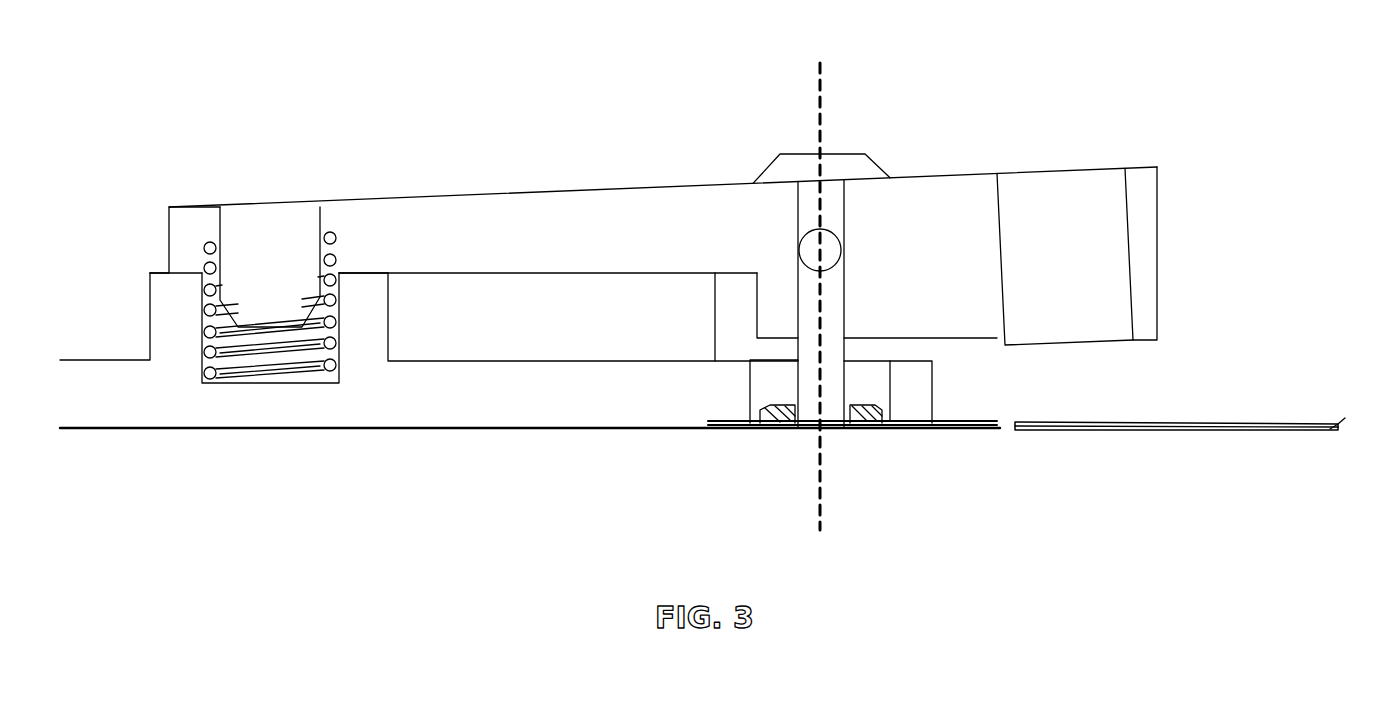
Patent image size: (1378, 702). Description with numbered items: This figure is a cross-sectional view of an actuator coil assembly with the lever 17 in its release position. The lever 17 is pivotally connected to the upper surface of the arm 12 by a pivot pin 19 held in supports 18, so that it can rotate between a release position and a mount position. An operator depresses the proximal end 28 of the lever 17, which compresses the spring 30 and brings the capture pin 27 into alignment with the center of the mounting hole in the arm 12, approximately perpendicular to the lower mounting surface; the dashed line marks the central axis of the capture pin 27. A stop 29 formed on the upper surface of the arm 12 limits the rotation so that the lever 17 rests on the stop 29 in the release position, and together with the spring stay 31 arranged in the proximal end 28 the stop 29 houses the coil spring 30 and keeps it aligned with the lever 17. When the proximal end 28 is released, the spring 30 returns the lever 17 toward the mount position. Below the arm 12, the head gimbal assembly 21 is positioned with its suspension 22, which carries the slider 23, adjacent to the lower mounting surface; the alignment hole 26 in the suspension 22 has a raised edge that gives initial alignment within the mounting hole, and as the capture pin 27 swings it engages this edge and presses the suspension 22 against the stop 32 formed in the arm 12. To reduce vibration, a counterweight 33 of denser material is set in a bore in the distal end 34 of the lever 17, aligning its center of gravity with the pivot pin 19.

The arm 12 is at (523, 407).
The lever 17 is at (477, 207).
The supports 18 is at (773, 158).
The pivot pin 19 is at (834, 243).
The head gimbal assembly 21 is at (1125, 440).
The suspension 22 is at (957, 427).
The slider 23 is at (1332, 436).
The alignment hole 26 is at (780, 423).
The capture pin 27 is at (838, 388).
The proximal end 28 is at (198, 207).
The stop 29 is at (170, 315).
The spring 30 is at (216, 354).
The spring stay 31 is at (267, 217).
The stop 32 is at (708, 428).
The counterweight 33 is at (1058, 164).
The distal end 34 is at (1127, 158).